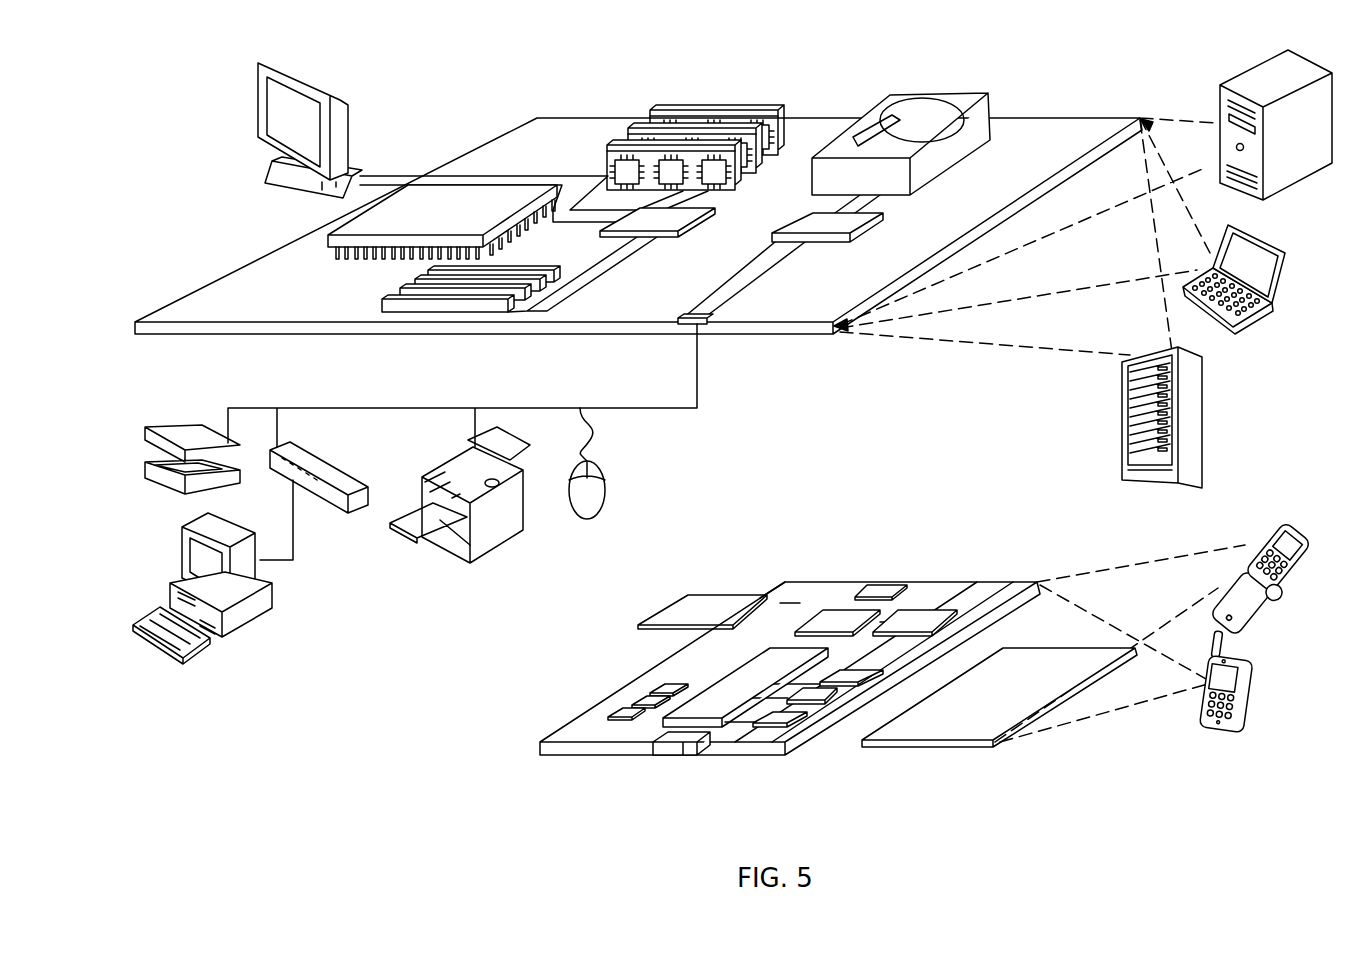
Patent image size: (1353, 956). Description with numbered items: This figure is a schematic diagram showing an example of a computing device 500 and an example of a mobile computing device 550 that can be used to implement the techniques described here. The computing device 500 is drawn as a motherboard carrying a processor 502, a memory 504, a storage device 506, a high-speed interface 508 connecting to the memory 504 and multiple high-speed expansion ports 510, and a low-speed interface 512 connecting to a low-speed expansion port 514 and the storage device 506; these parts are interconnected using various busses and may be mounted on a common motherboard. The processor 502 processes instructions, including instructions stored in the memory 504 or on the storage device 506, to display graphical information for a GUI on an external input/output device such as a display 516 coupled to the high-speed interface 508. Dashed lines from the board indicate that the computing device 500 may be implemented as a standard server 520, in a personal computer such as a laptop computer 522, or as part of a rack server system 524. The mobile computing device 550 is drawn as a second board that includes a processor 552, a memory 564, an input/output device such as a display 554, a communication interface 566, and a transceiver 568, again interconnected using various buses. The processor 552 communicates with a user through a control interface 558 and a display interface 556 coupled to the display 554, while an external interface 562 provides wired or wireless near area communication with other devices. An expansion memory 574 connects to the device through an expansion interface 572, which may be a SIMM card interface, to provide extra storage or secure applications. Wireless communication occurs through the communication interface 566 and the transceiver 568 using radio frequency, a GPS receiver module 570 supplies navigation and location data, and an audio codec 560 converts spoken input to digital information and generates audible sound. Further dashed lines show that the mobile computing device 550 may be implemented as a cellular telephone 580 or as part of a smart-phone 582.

The computing device 500 is at (456, 88).
The processor 502 is at (328, 237).
The memory 504 is at (666, 105).
The storage device 506 is at (904, 97).
The high-speed interface 508 is at (633, 222).
The high-speed expansion ports 510 is at (387, 298).
The low-speed interface 512 is at (805, 222).
The low-speed expansion port 514 is at (708, 323).
The display 516 is at (266, 63).
The standard server 520 is at (1219, 103).
The laptop computer 522 is at (1286, 224).
The rack server system 524 is at (1123, 440).
The mobile computing device 550 is at (505, 757).
The processor 552 is at (717, 712).
The display 554 is at (958, 732).
The display interface 556 is at (788, 724).
The control interface 558 is at (818, 702).
The audio codec 560 is at (850, 684).
The external interface 562 is at (683, 757).
The memory 564 is at (632, 706).
The communication interface 566 is at (838, 617).
The transceiver 568 is at (917, 617).
The GPS receiver module 570 is at (890, 582).
The expansion interface 572 is at (767, 592).
The expansion memory 574 is at (688, 594).
The cellular telephone 580 is at (1255, 530).
The smart-phone 582 is at (1198, 697).